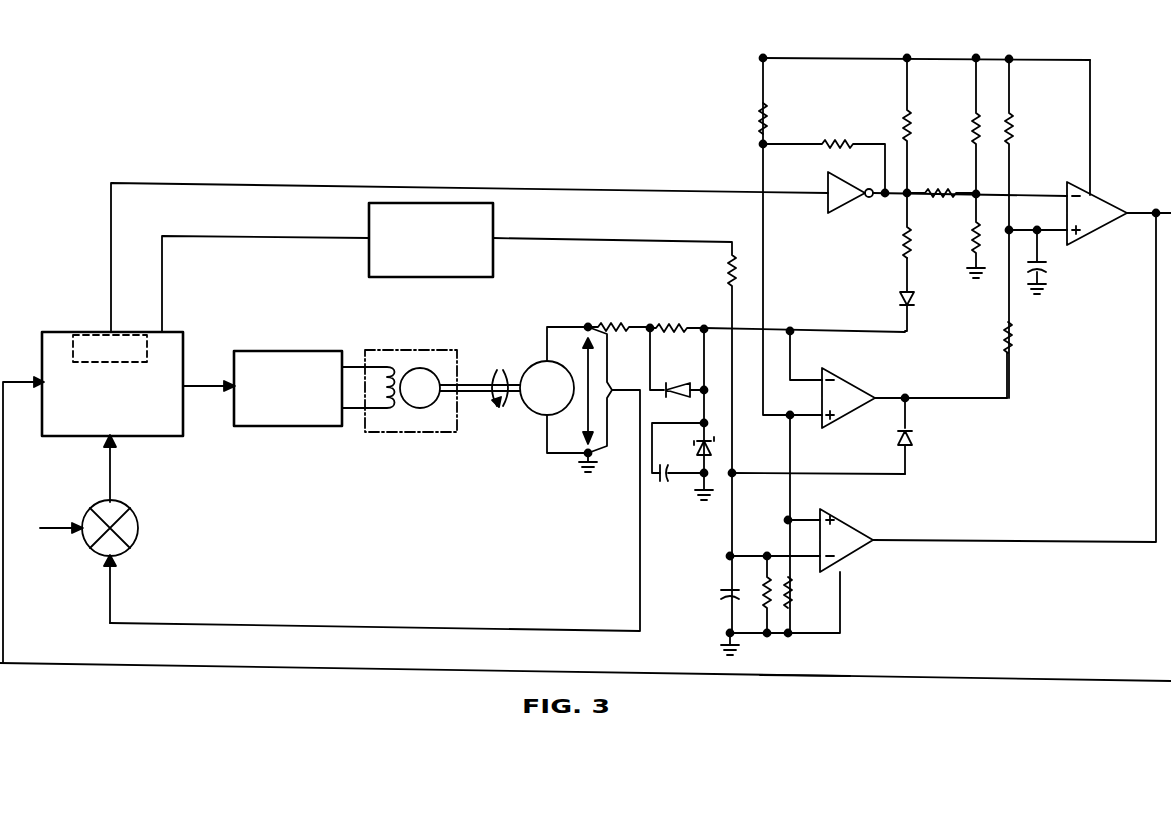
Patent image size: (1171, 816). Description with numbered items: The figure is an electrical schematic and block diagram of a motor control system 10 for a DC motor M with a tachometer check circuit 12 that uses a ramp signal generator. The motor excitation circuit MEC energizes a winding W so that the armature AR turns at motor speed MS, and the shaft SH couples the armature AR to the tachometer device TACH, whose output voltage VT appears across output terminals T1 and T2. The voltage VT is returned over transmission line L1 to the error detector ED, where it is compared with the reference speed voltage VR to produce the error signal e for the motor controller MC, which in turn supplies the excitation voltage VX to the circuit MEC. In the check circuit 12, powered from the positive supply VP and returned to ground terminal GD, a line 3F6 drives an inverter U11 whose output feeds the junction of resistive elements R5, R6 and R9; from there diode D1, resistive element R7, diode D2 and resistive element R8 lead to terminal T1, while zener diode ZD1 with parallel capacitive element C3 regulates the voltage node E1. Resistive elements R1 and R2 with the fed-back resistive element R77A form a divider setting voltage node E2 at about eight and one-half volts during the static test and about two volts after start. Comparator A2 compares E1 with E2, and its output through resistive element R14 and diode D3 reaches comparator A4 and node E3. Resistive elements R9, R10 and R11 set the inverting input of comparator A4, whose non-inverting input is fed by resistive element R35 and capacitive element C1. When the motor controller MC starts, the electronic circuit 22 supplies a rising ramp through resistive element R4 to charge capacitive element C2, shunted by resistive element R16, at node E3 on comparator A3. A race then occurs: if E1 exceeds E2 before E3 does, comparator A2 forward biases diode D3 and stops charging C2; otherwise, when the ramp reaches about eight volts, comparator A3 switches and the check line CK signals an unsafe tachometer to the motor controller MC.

The motor controller MC is at (68, 332).
The error signal e is at (117, 468).
The error detector ED is at (138, 528).
The reference speed voltage signal VR is at (47, 528).
The tachometer output voltage VT is at (350, 480).
The voltage transmission line L1 is at (322, 627).
The motor excitation voltage VX is at (210, 382).
The motor excitation circuit MEC is at (278, 348).
The motor M is at (435, 350).
The winding W is at (387, 408).
The armature AR is at (420, 388).
The shaft SH is at (472, 382).
The motor speed MS is at (504, 369).
The tachometer device TACH is at (547, 388).
The output terminal T1 is at (586, 326).
The output terminal T2 is at (586, 456).
The resistive element R8 is at (620, 310).
The resistive element R7 is at (669, 310).
The diode D2 is at (687, 382).
The zener diode ZD1 is at (692, 444).
The capacitive element C3 is at (662, 492).
The resistive element R4 is at (728, 272).
The voltage node E1 is at (790, 331).
The voltage node E2 is at (790, 415).
The voltage node E3 is at (724, 564).
The comparator A2 is at (850, 392).
The comparator A3 is at (858, 534).
The comparator A4 is at (1099, 200).
The diode D1 is at (894, 292).
The diode D3 is at (916, 436).
The resistive element R6 is at (892, 238).
The resistive element R5 is at (902, 120).
The resistive element R9 is at (946, 180).
The resistive element R10 is at (970, 124).
The resistive element R11 is at (970, 244).
The resistive element R35 is at (1012, 128).
The resistive element R14 is at (998, 338).
The capacitive element C1 is at (1050, 270).
The resistive element R1 is at (756, 120).
The resistive element R77A is at (830, 142).
The inverter U11 is at (844, 174).
The positive power supply voltage VP is at (763, 58).
The line 3F6 is at (406, 186).
The electronic circuit 22 is at (493, 222).
The motor control system 10 is at (590, 660).
The tachometer check circuit 12 is at (1031, 441).
The check line CK is at (804, 674).
The capacitive element C2 is at (714, 598).
The resistive element R16 is at (764, 592).
The resistive element R2 is at (794, 600).
The ground terminal GD is at (716, 644).